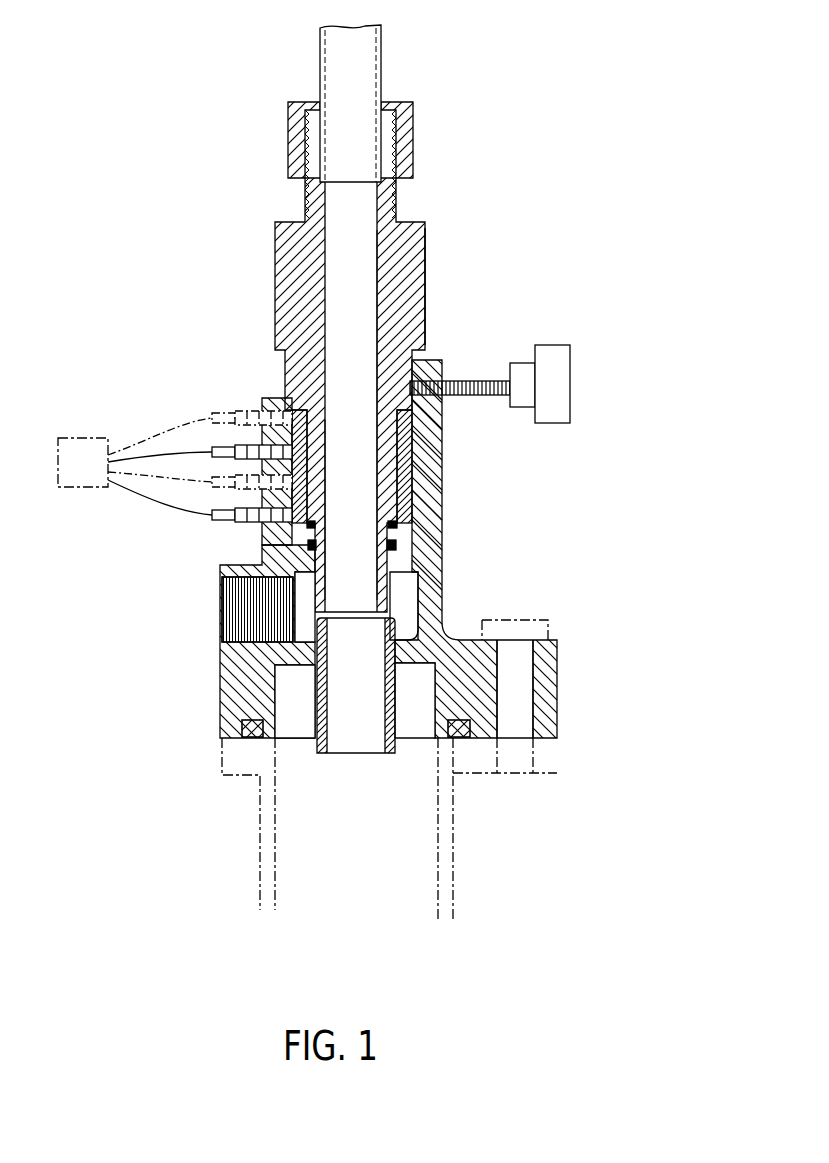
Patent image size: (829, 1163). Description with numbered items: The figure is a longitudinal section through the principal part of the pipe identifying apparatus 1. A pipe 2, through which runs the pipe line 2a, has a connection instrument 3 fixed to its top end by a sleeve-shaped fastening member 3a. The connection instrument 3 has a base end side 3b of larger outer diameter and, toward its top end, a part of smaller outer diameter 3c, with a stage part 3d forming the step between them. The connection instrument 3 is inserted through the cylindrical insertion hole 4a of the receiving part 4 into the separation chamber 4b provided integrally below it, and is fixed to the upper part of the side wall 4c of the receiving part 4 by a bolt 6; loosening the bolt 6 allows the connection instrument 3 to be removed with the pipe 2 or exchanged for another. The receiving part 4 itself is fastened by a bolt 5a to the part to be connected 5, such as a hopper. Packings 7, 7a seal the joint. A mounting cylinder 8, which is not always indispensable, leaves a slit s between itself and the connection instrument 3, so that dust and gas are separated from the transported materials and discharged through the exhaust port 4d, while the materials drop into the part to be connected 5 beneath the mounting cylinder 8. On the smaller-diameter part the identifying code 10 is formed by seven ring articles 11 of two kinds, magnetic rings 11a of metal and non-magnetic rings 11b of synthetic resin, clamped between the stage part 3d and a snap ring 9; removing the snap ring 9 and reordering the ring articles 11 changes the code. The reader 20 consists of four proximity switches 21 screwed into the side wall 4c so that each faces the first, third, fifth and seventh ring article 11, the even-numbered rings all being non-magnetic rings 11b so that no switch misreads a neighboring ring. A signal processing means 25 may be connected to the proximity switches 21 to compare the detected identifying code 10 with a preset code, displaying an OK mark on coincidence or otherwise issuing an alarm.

The pipe identifying apparatus 1 is at (450, 220).
The pipe 2 is at (381, 65).
The pipe line 2a is at (366, 162).
The connection instrument 3 is at (425, 257).
The fastening member 3a is at (413, 143).
The base end side 3b is at (425, 300).
The part of smaller outer diameter 3c is at (377, 455).
The stage part 3d is at (382, 385).
The receiving part 4 is at (262, 400).
The insertion hole 4a is at (262, 560).
The separation chamber 4b is at (303, 642).
The side wall 4c is at (222, 712).
The exhaust port 4d is at (232, 610).
The part to be connected 5 is at (560, 760).
The bolt 5a is at (565, 622).
The bolt 6 is at (565, 383).
The packing 7 is at (308, 585).
The packing 7a is at (464, 820).
The mounting cylinder 8 is at (362, 740).
The snap ring 9 is at (318, 530).
The identifying code 10 is at (295, 408).
The ring article 11 is at (537, 410).
The magnetic ring 11a is at (440, 589).
The non-magnetic ring 11b is at (440, 563).
The reader 20 is at (93, 497).
The proximity switch 21 is at (212, 522).
The signal processing means 25 is at (105, 438).
The slit s is at (403, 665).